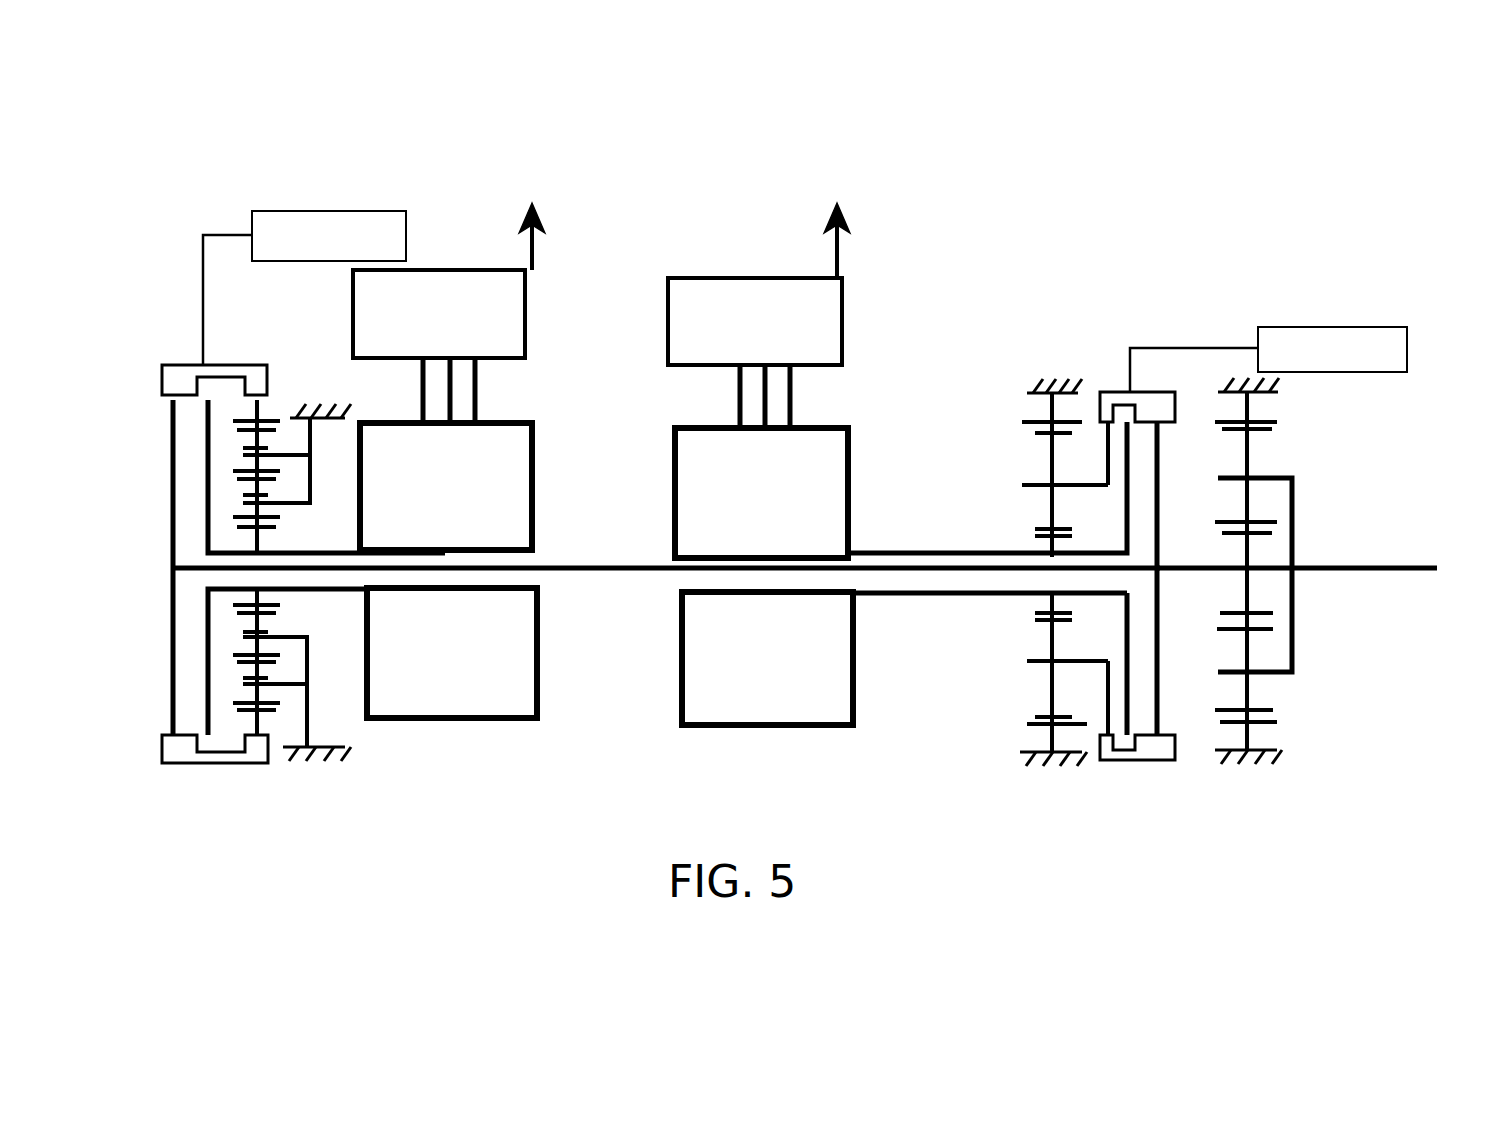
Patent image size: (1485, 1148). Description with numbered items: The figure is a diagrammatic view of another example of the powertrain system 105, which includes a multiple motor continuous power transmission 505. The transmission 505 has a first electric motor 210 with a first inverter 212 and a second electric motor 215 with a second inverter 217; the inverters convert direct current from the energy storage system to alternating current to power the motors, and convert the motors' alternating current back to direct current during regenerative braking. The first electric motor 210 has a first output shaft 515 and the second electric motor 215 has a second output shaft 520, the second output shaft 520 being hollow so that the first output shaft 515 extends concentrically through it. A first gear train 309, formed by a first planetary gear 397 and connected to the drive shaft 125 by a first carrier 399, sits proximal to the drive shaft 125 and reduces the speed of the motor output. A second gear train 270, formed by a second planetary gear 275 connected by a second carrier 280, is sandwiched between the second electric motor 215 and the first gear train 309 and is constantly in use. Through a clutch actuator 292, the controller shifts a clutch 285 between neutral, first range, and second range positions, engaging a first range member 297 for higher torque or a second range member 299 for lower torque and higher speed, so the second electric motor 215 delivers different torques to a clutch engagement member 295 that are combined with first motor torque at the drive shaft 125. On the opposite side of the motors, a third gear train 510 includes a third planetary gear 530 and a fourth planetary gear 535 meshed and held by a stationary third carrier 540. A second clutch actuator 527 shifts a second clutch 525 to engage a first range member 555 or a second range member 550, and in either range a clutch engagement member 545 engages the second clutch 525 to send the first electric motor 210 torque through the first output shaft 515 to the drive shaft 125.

The powertrain system 105 is at (1213, 115).
The multiple motor continuous power transmission 505 is at (1283, 236).
The second clutch actuator 527 is at (364, 211).
The first inverter 212 is at (465, 270).
The second inverter 217 is at (748, 278).
The first electric motor 210 is at (535, 490).
The second electric motor 215 is at (850, 470).
The clutch actuator 292 is at (1330, 327).
The first range member 297 is at (1106, 440).
The clutch engagement member 295 is at (1160, 462).
The second carrier 280 is at (1075, 482).
The second planetary gear 275 is at (1052, 678).
The clutch 285 is at (1120, 760).
The second range member 299 is at (1135, 690).
The second gear train 270 is at (1131, 818).
The first gear train 309 is at (1244, 825).
The first carrier 399 is at (1295, 645).
The first planetary gear 397 is at (1250, 700).
The drive shaft 125 is at (1363, 572).
The first output shaft 515 is at (603, 572).
The second output shaft 520 is at (915, 594).
The second range member 550 is at (208, 455).
The clutch engagement member 545 is at (177, 621).
The fourth planetary gear 535 is at (258, 447).
The third planetary gear 530 is at (263, 517).
The third carrier 540 is at (307, 725).
The first range member 555 is at (258, 720).
The second clutch 525 is at (186, 763).
The third gear train 510 is at (228, 830).